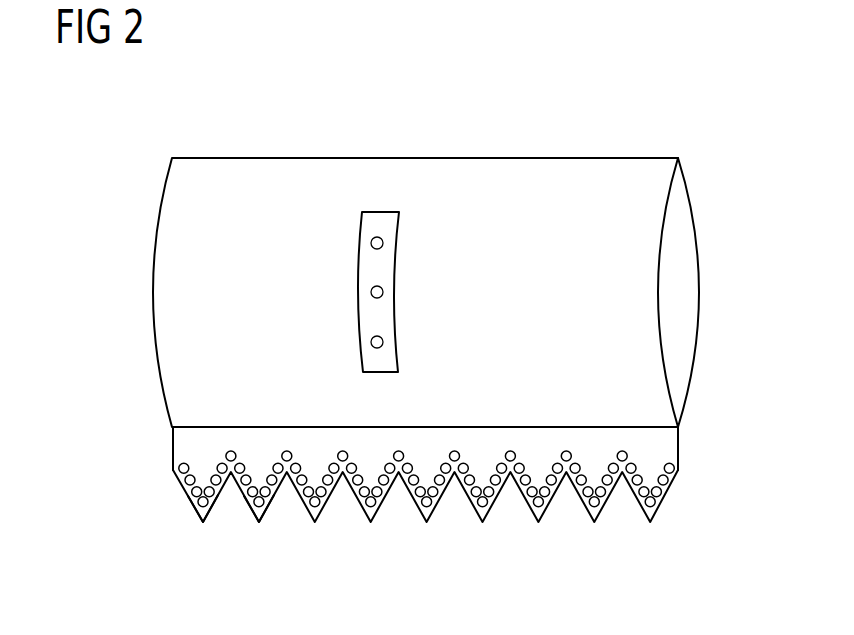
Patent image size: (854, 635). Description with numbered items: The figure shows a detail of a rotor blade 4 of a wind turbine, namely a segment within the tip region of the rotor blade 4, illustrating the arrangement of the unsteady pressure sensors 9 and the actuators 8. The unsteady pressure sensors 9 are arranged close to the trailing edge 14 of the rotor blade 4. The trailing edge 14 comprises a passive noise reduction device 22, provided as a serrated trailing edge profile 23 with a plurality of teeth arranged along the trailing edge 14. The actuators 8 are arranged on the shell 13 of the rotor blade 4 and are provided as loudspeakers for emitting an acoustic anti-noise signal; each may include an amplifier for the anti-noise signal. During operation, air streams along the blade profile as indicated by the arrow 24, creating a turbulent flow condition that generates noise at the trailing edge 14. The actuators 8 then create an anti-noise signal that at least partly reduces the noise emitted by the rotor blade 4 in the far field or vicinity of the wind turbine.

The rotor blade 4 is at (525, 157).
The actuators 8 is at (378, 237).
The shell 13 is at (605, 282).
The arrow 24 is at (436, 130).
The unsteady pressure sensors 9 is at (678, 470).
The trailing edge 14 is at (660, 507).
The passive noise reduction device 22 is at (203, 522).
The serrated trailing edge profile 23 is at (243, 551).